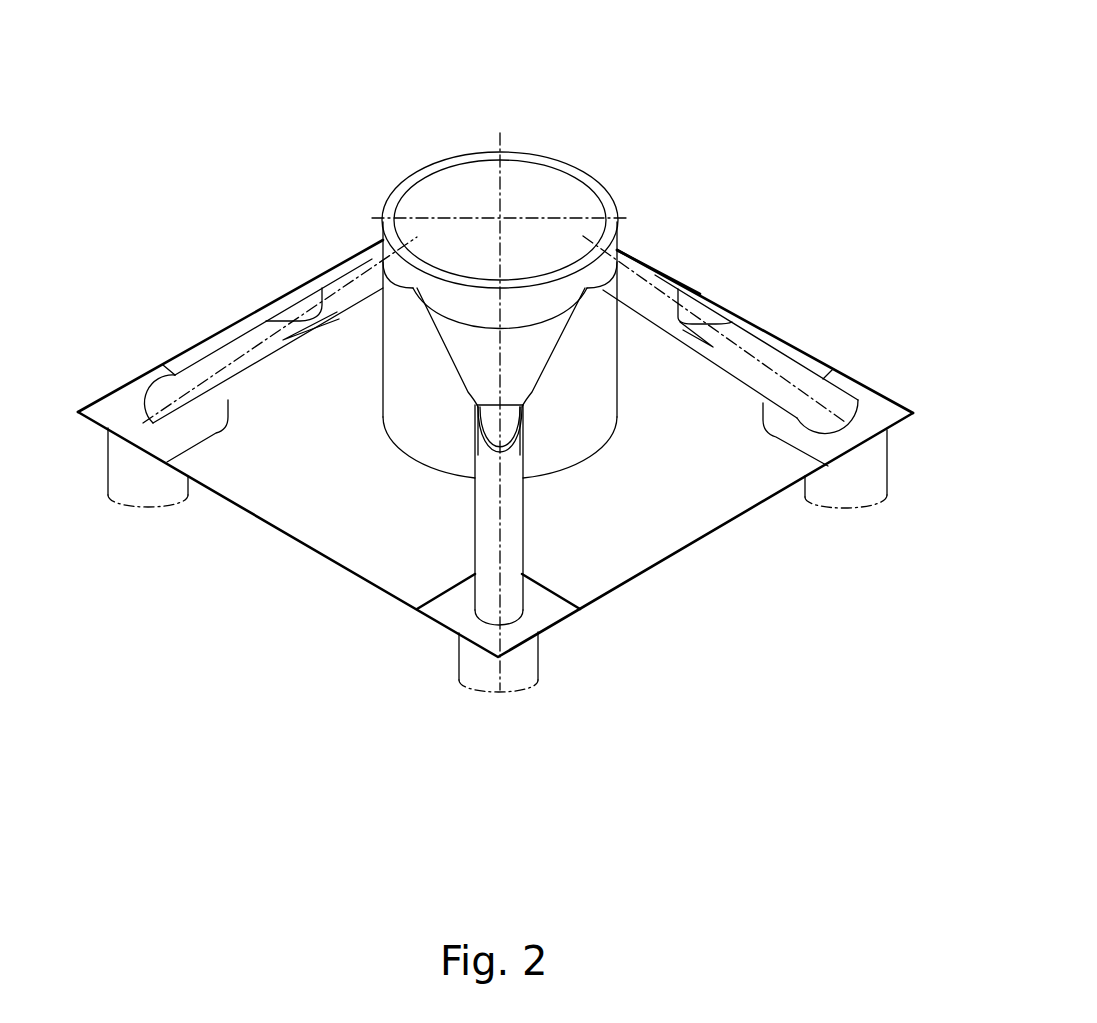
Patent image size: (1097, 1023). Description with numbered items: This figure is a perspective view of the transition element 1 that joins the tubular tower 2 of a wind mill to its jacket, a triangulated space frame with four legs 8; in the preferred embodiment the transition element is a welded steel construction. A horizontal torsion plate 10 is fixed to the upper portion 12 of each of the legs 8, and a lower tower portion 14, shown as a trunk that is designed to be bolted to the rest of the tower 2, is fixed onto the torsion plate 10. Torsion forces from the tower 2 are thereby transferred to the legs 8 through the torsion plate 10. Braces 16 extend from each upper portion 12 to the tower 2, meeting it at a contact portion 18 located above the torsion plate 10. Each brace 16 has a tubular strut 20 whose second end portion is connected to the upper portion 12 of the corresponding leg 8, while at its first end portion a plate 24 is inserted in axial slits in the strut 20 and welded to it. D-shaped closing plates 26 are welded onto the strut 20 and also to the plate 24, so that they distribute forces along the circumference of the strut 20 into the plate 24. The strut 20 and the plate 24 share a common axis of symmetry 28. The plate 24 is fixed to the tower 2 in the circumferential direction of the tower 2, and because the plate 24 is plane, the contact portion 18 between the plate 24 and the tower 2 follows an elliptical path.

The transition element 1 is at (652, 140).
The tower 2 is at (398, 190).
The legs 8 is at (538, 667).
The torsion plate 10 is at (375, 567).
The upper portion 12 is at (523, 650).
The lower tower portion 14 is at (398, 421).
The brace 16 is at (772, 333).
The contact portion 18 is at (628, 250).
The tubular strut 20 is at (787, 370).
The plate 24 is at (655, 268).
The D-shaped closing plate 26 is at (700, 307).
The axis of symmetry 28 is at (727, 340).